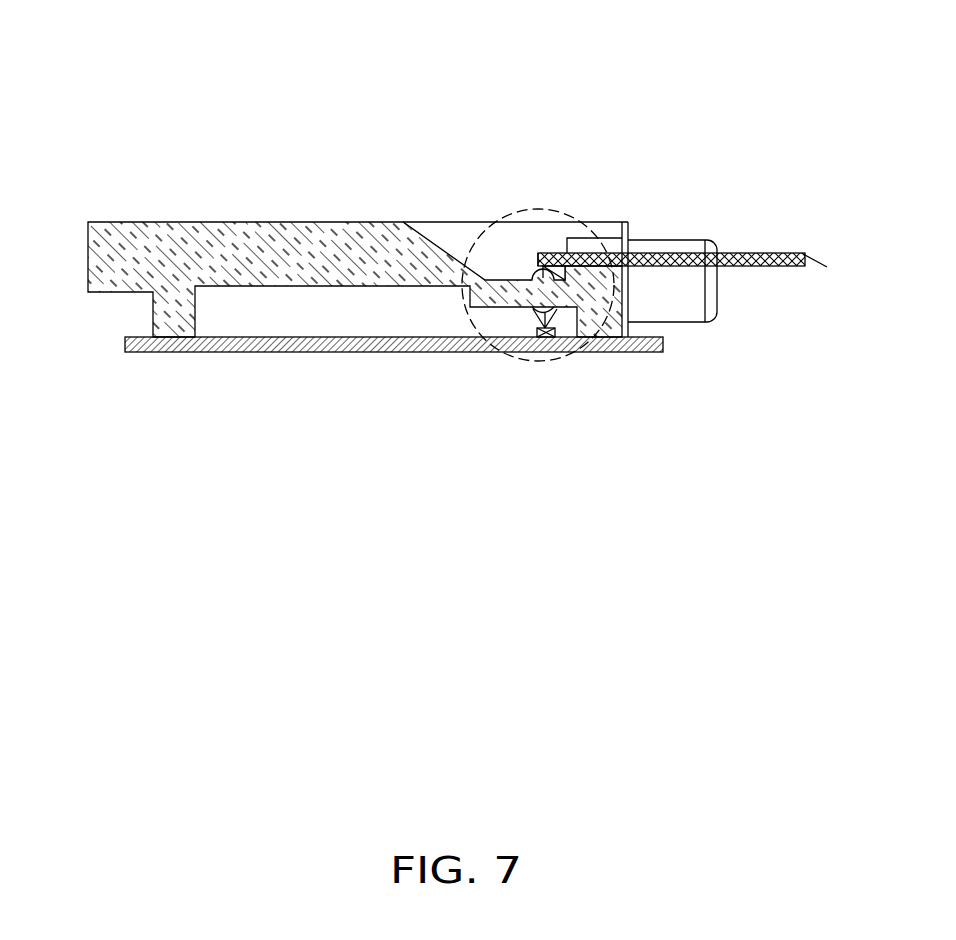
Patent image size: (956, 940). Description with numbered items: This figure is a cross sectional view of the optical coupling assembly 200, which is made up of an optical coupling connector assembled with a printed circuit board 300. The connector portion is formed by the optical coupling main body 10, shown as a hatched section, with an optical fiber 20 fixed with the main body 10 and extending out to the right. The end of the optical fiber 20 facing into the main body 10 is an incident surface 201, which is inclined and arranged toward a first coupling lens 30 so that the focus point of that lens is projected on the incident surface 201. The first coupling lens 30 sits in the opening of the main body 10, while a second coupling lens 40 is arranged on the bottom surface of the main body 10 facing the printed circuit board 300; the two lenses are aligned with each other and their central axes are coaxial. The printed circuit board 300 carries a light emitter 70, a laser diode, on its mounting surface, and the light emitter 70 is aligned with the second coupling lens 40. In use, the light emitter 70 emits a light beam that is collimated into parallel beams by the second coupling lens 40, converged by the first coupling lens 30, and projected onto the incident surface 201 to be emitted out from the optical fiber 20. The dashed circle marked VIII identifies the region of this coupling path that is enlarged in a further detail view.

The optical coupling assembly 200 is at (511, 43).
The optical coupling main body 10 is at (193, 247).
The optical fiber 20 is at (773, 253).
The incident surface 201 is at (541, 253).
The first coupling lens 30 is at (532, 279).
The second coupling lens 40 is at (537, 314).
The light emitter 70 is at (548, 316).
The printed circuit board 300 is at (167, 353).
The detail view region VIII is at (577, 213).